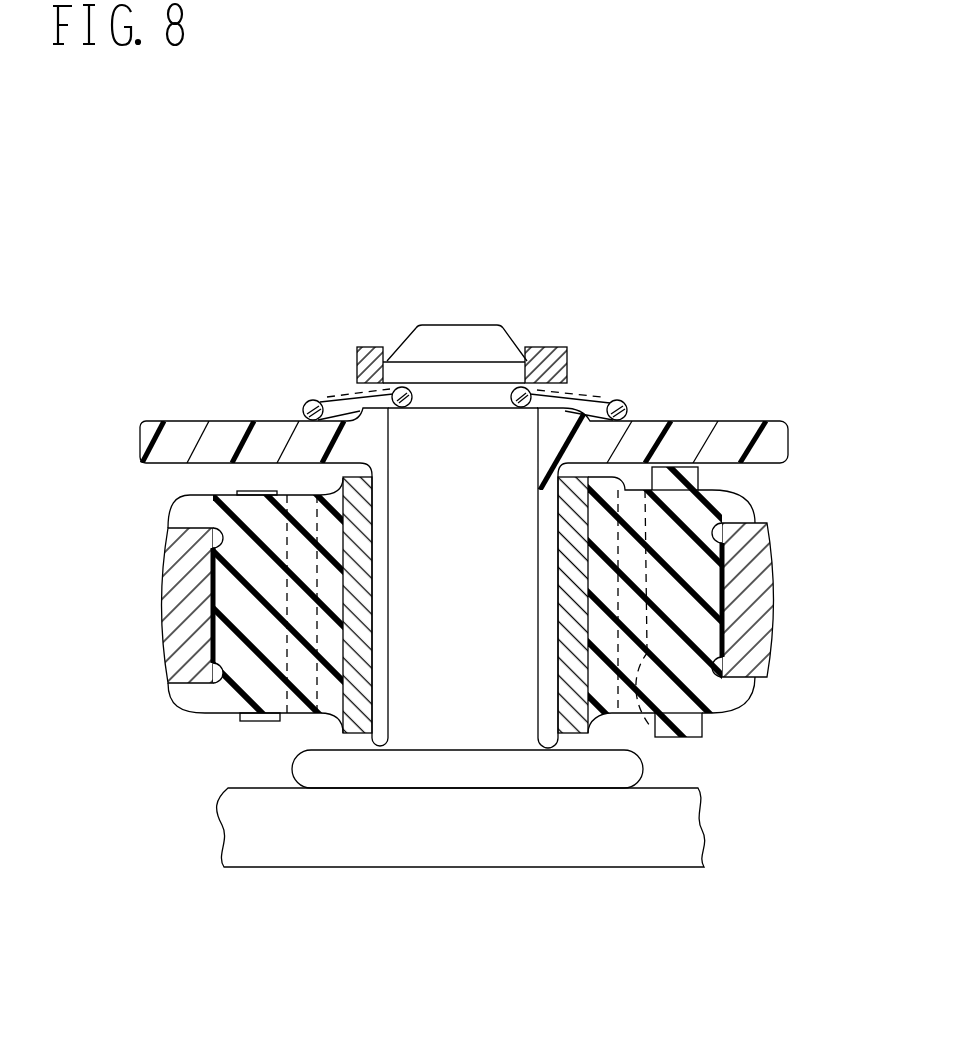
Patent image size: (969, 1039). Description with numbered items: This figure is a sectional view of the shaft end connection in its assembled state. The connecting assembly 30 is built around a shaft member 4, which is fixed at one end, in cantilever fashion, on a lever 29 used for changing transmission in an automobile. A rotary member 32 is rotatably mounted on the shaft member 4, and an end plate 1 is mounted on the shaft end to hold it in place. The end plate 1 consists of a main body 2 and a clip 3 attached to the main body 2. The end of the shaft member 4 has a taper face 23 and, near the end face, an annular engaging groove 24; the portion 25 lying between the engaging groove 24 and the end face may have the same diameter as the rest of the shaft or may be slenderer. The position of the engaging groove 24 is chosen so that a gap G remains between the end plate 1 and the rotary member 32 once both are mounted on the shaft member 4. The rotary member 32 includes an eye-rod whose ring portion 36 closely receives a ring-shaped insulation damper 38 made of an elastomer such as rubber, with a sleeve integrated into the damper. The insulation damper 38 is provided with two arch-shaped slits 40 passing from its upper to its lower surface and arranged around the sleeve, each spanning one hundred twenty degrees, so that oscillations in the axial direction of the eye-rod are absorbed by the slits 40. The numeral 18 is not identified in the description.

The end plate 1 is at (223, 284).
The main body 2 is at (207, 425).
The clip 3 is at (303, 407).
The shaft member 4 is at (472, 727).
The washer 18 is at (417, 336).
The taper face 23 is at (513, 335).
The engaging groove 24 is at (484, 391).
The portion 25 is at (568, 376).
The lever 29 is at (277, 817).
The connecting assembly 30 is at (667, 393).
The rotary member 32 is at (146, 618).
The ring portion 36 is at (760, 614).
The insulation damper 38 is at (687, 697).
The slit 40 is at (650, 726).
The gap G is at (710, 480).